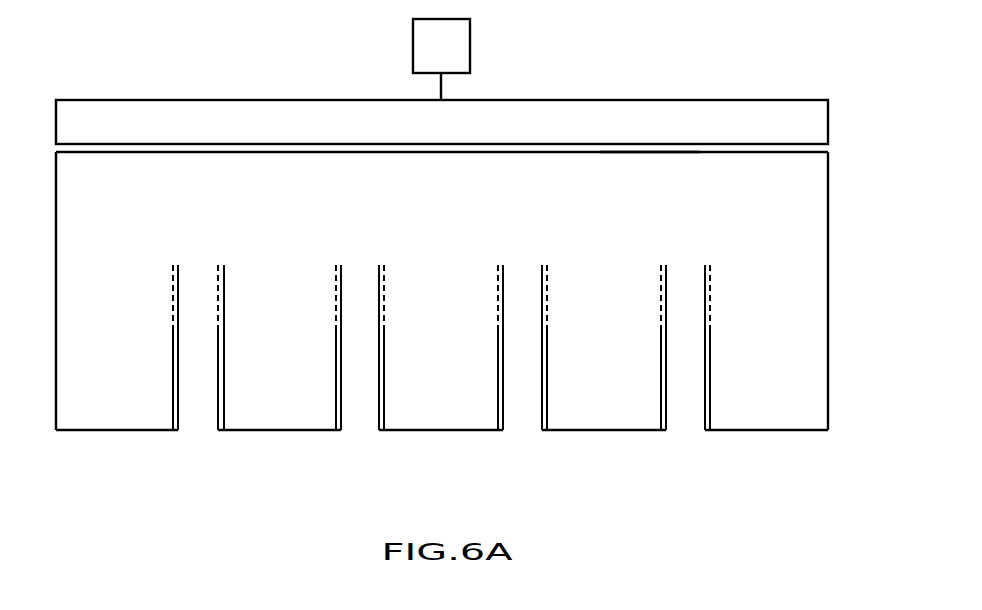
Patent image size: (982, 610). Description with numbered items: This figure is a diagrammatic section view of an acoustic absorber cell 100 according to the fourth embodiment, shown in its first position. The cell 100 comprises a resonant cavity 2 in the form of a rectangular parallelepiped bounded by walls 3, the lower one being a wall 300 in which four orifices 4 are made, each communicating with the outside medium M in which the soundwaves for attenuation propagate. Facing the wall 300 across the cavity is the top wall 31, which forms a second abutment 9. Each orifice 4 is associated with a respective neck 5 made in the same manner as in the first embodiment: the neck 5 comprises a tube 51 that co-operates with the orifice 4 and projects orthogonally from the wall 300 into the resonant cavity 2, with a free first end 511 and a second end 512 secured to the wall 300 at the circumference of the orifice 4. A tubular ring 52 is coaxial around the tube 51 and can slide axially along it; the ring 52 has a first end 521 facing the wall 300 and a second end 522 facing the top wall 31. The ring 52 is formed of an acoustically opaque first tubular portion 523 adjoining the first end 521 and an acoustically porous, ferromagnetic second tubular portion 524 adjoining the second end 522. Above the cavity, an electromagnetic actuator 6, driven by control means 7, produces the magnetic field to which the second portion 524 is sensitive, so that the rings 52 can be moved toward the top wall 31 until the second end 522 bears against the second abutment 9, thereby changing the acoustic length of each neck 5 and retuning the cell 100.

The cell 100 is at (89, 72).
The control means 7 is at (435, 58).
The electromagnetic actuator 6 is at (435, 138).
The resonant cavity 2 is at (801, 227).
The walls 3 is at (56, 198).
The top wall 31 is at (797, 156).
The second abutment 9 is at (648, 156).
The wall 300 is at (80, 431).
The orifices 4 is at (192, 403).
The neck 5 is at (240, 333).
The tube 51 is at (224, 364).
The first end 511 is at (217, 256).
The second end 512 is at (218, 431).
The ring 52 is at (173, 343).
The first end 521 is at (167, 424).
The second end 522 is at (173, 261).
The first tubular portion 523 is at (173, 362).
The second tubular portion 524 is at (173, 291).
The outside medium M is at (13, 297).